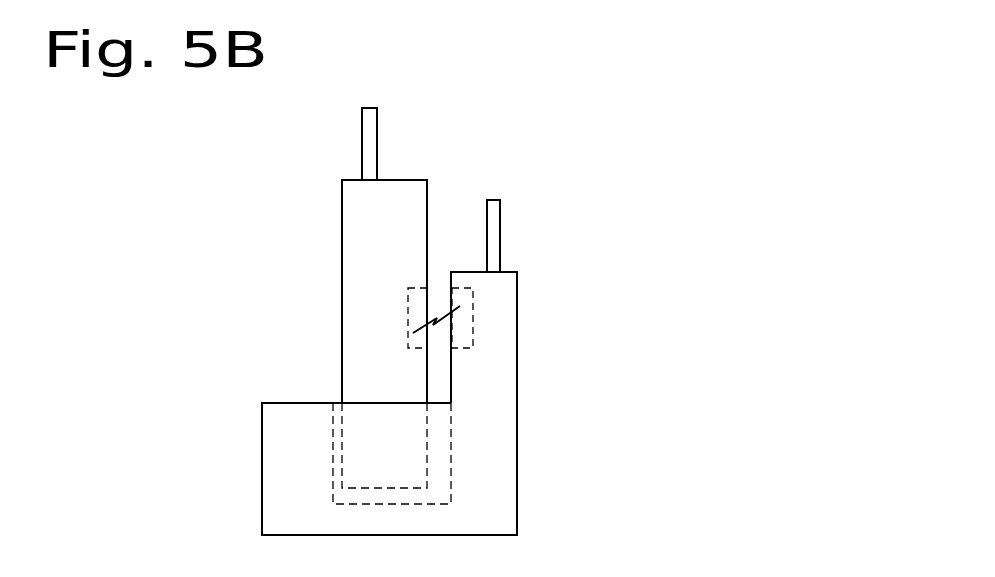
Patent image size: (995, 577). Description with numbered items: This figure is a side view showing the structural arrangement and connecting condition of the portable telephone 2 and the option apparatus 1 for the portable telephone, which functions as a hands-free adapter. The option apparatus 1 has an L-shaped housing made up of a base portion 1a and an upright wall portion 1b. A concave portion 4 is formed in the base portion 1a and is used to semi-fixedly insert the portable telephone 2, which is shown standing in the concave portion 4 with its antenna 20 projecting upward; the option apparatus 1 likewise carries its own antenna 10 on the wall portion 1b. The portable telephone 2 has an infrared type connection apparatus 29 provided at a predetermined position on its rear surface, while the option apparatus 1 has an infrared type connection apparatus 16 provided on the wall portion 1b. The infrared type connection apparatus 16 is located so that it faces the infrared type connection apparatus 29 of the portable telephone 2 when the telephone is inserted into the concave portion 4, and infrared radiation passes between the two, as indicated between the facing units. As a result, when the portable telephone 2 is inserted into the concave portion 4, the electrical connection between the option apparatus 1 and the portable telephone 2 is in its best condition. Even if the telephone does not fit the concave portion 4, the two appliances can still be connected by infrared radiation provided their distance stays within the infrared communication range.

The option apparatus for the portable telephone 1 is at (448, 403).
The base portion 1a is at (275, 453).
The wall portion 1b is at (517, 390).
The portable telephone 2 is at (428, 207).
The concave portion 4 is at (335, 403).
The antenna 10 is at (500, 225).
The infrared type connection apparatus 16 is at (473, 320).
The antenna 20 is at (377, 133).
The infrared type connection apparatus 29 is at (407, 308).